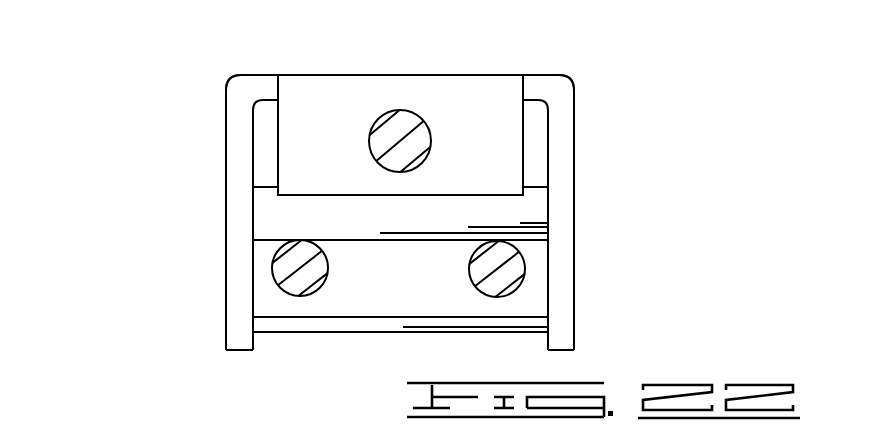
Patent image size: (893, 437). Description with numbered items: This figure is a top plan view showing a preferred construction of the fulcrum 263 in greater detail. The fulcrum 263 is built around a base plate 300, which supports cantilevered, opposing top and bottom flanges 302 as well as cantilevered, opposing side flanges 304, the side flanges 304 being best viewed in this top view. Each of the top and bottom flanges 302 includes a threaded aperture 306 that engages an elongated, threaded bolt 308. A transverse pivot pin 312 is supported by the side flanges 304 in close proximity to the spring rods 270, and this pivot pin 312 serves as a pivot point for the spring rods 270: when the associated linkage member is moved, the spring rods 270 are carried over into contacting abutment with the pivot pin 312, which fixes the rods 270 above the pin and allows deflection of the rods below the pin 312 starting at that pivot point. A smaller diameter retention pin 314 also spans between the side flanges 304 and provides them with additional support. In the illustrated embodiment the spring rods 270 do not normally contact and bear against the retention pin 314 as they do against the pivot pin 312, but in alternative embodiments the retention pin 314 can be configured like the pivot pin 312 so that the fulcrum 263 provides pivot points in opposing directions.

The fulcrum 263 is at (124, 91).
The base plate 300 is at (330, 75).
The top and bottom flanges 302 is at (356, 98).
The side flanges 304 is at (238, 162).
The threaded aperture 306 is at (411, 109).
The threaded bolt 308 is at (448, 141).
The pivot pin 312 is at (312, 220).
The retention pin 314 is at (348, 325).
The spring rods 270 is at (283, 273).